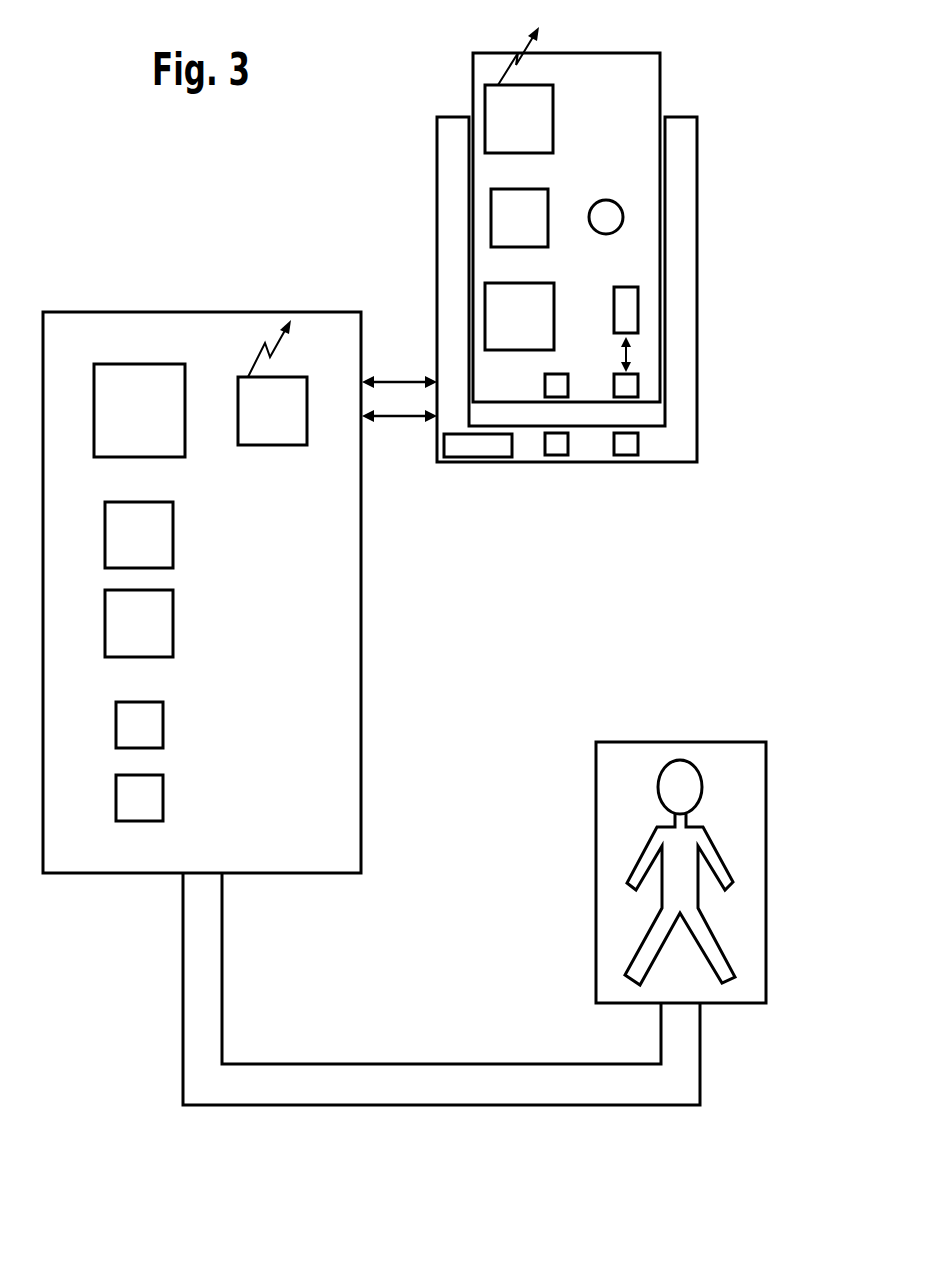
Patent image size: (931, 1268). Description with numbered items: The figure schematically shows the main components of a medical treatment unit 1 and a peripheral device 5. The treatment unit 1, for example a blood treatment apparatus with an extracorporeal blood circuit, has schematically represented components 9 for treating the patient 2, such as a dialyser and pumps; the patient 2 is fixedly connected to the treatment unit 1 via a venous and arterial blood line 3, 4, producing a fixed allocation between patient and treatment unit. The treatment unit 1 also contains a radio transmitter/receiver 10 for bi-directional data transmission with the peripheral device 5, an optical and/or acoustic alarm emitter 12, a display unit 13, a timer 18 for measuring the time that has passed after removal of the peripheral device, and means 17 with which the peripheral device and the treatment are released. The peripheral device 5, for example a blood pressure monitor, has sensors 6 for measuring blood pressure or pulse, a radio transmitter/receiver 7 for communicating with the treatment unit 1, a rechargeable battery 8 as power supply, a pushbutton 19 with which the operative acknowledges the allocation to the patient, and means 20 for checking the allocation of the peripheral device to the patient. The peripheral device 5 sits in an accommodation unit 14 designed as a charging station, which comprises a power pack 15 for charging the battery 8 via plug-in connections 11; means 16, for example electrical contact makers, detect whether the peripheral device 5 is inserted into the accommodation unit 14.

The treatment unit 1 is at (186, 296).
The patient 2 is at (678, 772).
The venous blood line 3 is at (416, 1064).
The arterial blood line 4 is at (457, 1105).
The peripheral device 5 is at (667, 93).
The sensors 6 is at (510, 334).
The radio transmitter/receiver 7 is at (510, 136).
The rechargeable battery 8 is at (628, 310).
The components for treatment 9 is at (130, 427).
The radio transmitter/receiver 10 is at (256, 427).
The plug-in connections 11 is at (627, 386).
The alarm emitter 12 is at (123, 552).
The display unit 13 is at (123, 641).
The accommodation unit 14 is at (696, 243).
The power pack 15 is at (477, 446).
The means for detecting insertion 16 is at (556, 386).
The means for releasing 17 is at (124, 815).
The timer 18 is at (124, 742).
The pushbutton 19 is at (606, 201).
The means for checking allocation 20 is at (503, 236).